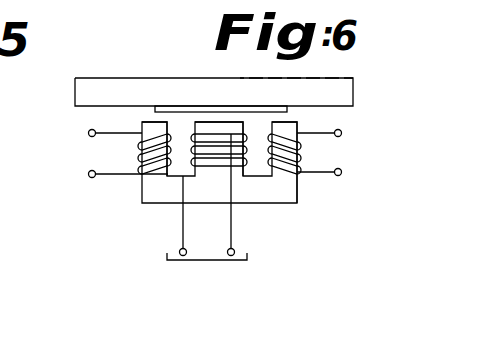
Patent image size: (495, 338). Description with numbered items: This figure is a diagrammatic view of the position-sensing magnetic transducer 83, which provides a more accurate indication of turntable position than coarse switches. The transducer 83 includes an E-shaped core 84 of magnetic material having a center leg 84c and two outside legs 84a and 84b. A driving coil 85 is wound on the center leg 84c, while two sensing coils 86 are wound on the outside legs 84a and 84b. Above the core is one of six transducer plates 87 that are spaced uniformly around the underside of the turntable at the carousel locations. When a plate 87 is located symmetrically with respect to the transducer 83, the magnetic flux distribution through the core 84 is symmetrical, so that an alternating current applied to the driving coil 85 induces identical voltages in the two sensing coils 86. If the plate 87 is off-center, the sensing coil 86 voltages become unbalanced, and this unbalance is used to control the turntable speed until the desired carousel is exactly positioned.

The magnetic transducer 83 is at (128, 243).
The E-shaped core 84 is at (296, 204).
The outside leg 84a is at (155, 190).
The outside leg 84b is at (288, 184).
The center leg 84c is at (218, 180).
The driving coil 85 is at (238, 238).
The sensing coils 86 is at (92, 178).
The transducer plate 87 is at (233, 106).